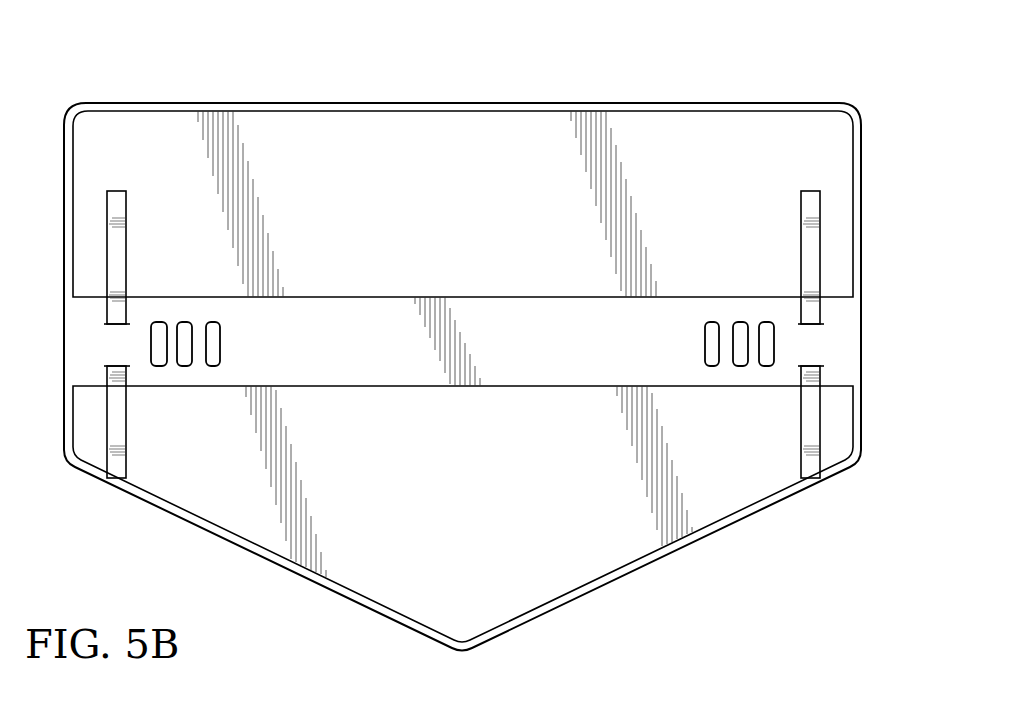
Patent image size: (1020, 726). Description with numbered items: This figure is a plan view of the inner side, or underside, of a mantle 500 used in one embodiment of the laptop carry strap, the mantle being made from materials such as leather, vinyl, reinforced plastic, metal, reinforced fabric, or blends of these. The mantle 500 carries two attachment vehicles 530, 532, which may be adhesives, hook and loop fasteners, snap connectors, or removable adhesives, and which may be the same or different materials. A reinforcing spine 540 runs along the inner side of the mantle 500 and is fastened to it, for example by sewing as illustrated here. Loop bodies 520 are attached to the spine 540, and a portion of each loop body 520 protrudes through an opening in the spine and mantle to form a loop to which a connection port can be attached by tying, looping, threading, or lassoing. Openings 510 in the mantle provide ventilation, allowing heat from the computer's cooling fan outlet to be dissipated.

The mantle 500 is at (128, 78).
The slots 510 is at (770, 347).
The loop body 520 is at (809, 248).
The attachment vehicle 530 is at (674, 134).
The attachment vehicle 532 is at (622, 533).
The spine 540 is at (113, 349).